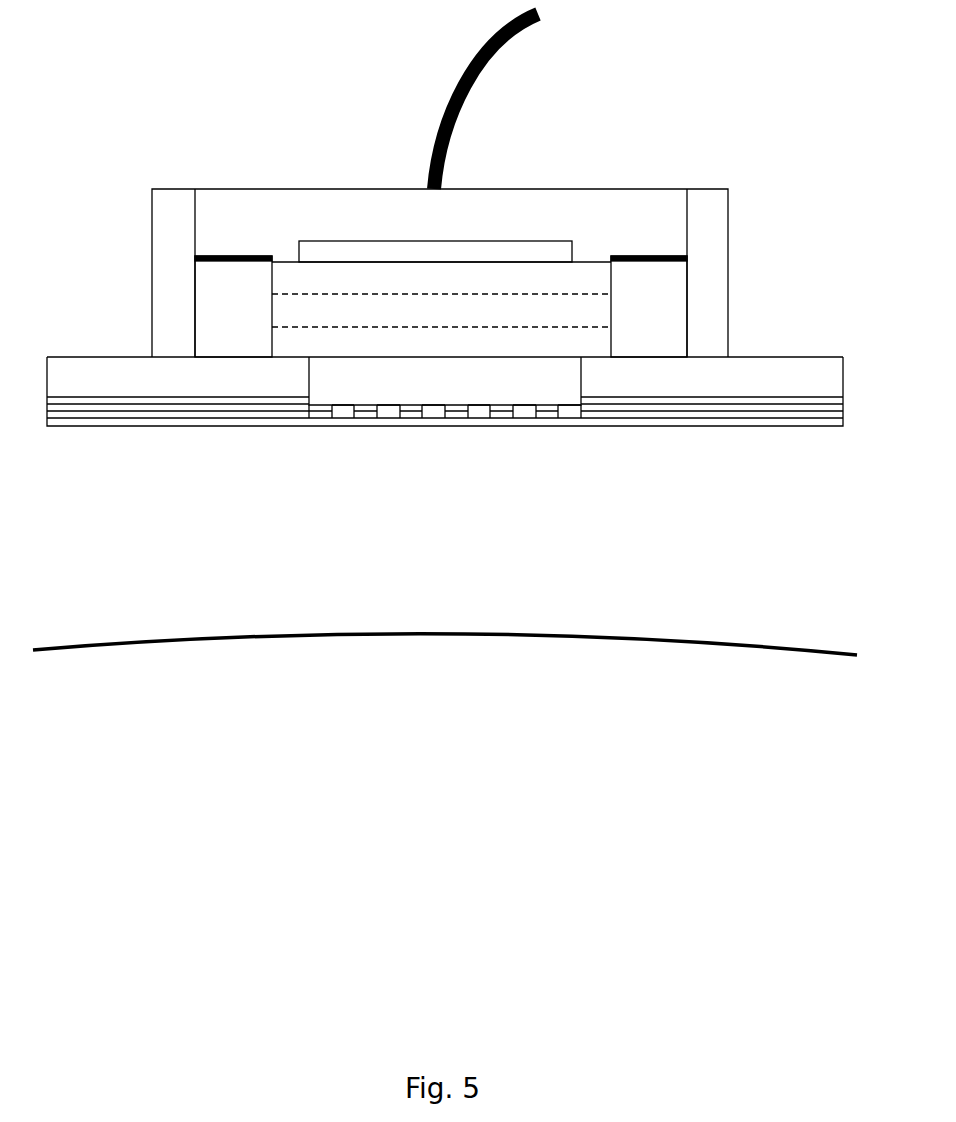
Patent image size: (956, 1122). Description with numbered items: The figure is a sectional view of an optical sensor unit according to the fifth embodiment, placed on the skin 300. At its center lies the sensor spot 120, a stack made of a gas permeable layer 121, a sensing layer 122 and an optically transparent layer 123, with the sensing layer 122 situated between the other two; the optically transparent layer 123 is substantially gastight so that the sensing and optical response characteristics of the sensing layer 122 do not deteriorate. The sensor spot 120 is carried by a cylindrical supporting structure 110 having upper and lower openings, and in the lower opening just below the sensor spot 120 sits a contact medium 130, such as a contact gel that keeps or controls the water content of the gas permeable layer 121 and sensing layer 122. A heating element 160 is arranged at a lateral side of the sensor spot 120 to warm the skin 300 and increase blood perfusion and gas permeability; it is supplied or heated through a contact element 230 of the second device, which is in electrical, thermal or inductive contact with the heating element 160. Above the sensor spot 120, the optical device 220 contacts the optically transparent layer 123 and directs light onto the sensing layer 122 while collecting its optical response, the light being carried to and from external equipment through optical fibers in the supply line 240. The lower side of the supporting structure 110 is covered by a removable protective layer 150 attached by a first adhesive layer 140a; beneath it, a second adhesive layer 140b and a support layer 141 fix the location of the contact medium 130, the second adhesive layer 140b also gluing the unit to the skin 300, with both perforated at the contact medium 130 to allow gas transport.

The supporting structure 110 is at (712, 215).
The sensor spot 120 is at (427, 413).
The gas permeable layer 121 is at (362, 347).
The sensing layer 122 is at (410, 315).
The optically transparent layer 123 is at (468, 280).
The contact medium 130 is at (562, 390).
The first adhesive layer 140a is at (66, 400).
The second adhesive layer 140b is at (643, 417).
The support layer 141 is at (170, 412).
The removable protective layer 150 is at (113, 426).
The heating element 160 is at (212, 300).
The optical device 220 is at (493, 253).
The contact element 230 is at (197, 258).
The supply line 240 is at (452, 60).
The skin 300 is at (133, 642).